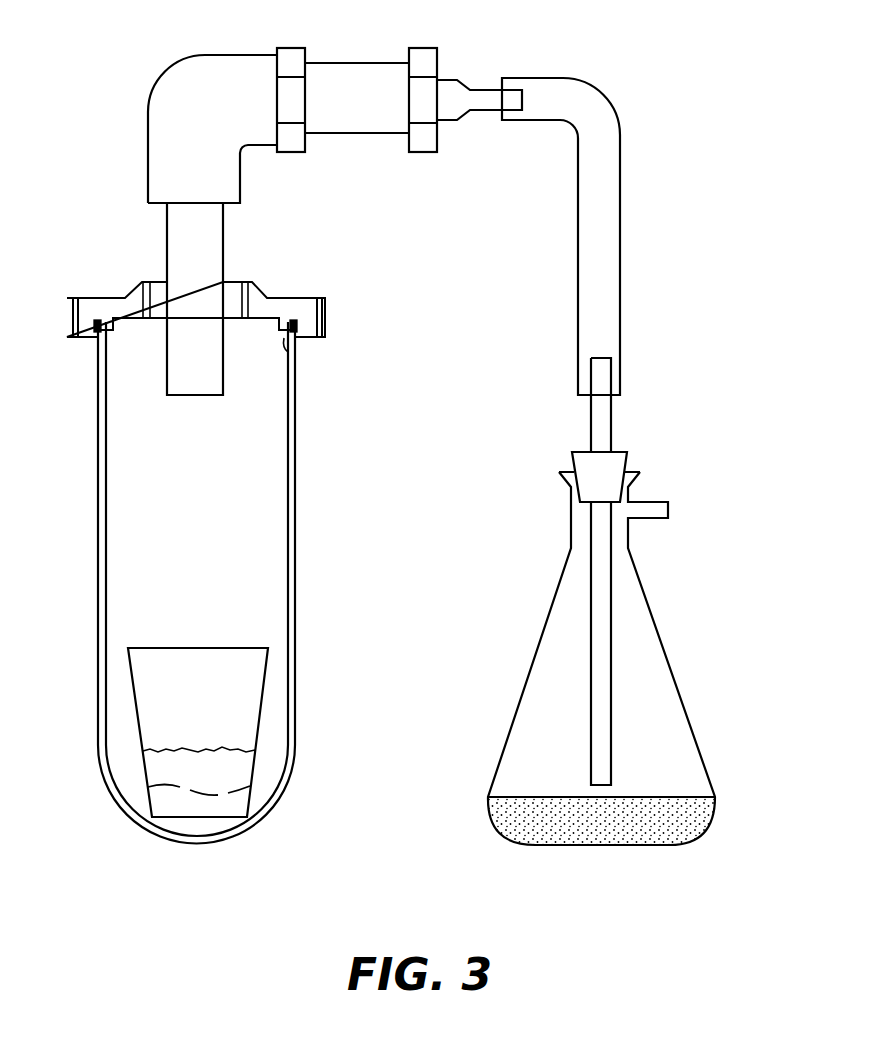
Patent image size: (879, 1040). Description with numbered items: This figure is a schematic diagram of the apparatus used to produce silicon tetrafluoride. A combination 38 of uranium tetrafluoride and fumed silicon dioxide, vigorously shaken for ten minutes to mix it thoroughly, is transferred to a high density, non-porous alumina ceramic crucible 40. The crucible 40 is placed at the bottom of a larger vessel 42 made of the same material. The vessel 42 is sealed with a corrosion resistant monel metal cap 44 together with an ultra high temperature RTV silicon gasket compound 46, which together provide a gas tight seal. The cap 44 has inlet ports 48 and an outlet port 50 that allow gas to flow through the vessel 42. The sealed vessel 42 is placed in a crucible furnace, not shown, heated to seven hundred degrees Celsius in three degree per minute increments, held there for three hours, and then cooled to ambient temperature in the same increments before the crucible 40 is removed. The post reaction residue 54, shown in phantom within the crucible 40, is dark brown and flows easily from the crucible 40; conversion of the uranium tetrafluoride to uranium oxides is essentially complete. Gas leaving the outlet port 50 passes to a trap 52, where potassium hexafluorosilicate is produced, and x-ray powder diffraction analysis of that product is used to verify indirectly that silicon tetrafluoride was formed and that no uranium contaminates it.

The combination 38 is at (237, 762).
The ceramic crucible 40 is at (263, 687).
The vessel 42 is at (295, 532).
The monel metal cap 44 is at (327, 308).
The RTV silicon gasket compound 46 is at (287, 348).
The inlet ports 48 is at (148, 320).
The outlet port 50 is at (225, 280).
The trap 52 is at (652, 612).
The post reaction residue 54 is at (240, 803).